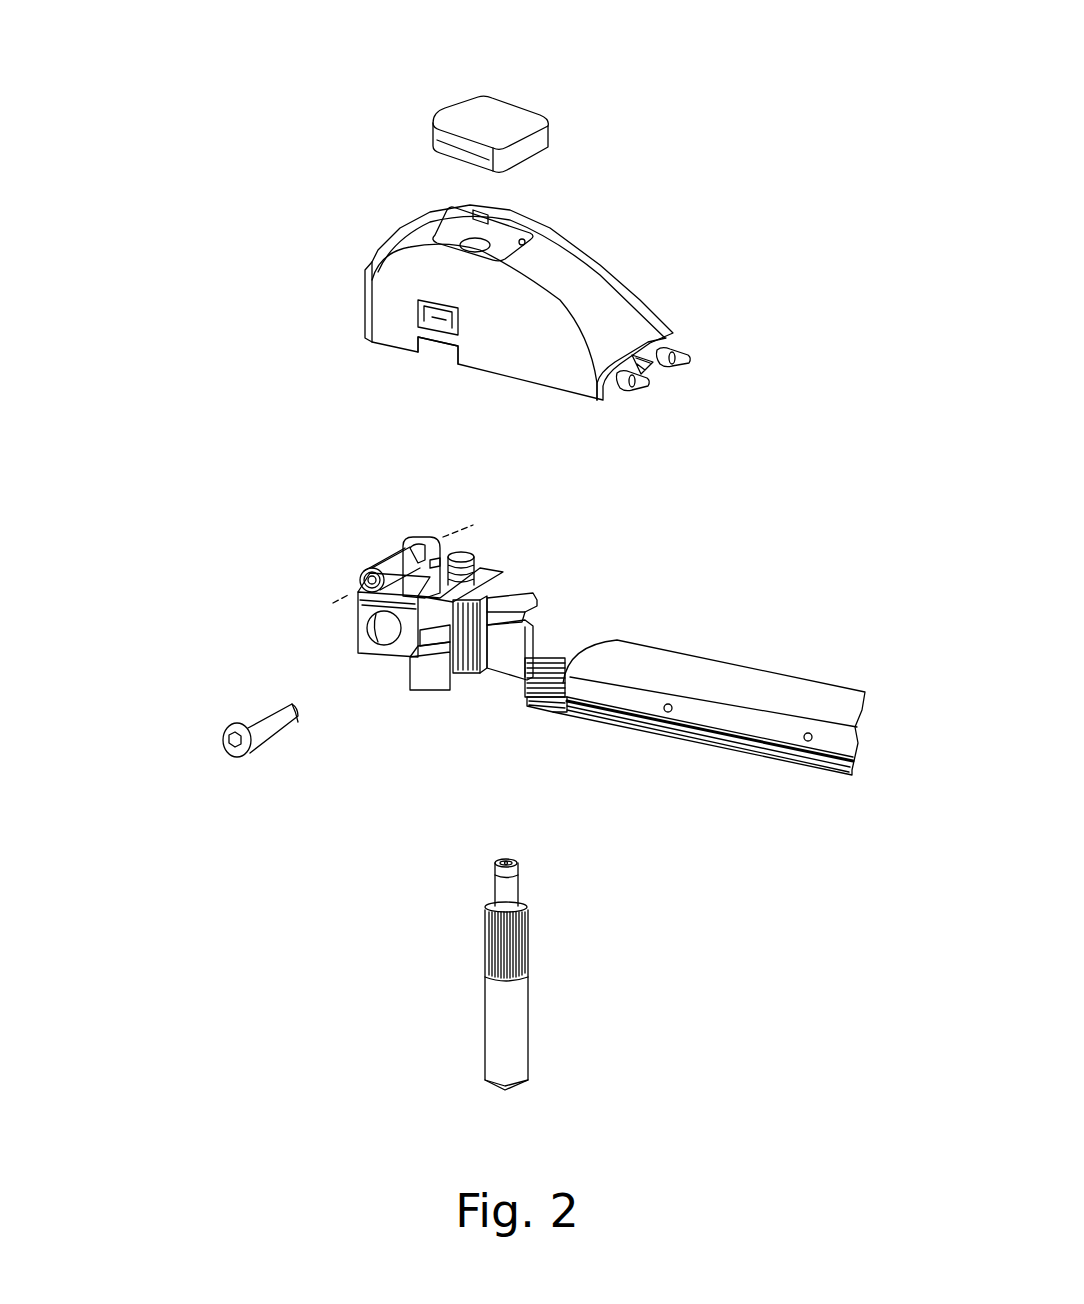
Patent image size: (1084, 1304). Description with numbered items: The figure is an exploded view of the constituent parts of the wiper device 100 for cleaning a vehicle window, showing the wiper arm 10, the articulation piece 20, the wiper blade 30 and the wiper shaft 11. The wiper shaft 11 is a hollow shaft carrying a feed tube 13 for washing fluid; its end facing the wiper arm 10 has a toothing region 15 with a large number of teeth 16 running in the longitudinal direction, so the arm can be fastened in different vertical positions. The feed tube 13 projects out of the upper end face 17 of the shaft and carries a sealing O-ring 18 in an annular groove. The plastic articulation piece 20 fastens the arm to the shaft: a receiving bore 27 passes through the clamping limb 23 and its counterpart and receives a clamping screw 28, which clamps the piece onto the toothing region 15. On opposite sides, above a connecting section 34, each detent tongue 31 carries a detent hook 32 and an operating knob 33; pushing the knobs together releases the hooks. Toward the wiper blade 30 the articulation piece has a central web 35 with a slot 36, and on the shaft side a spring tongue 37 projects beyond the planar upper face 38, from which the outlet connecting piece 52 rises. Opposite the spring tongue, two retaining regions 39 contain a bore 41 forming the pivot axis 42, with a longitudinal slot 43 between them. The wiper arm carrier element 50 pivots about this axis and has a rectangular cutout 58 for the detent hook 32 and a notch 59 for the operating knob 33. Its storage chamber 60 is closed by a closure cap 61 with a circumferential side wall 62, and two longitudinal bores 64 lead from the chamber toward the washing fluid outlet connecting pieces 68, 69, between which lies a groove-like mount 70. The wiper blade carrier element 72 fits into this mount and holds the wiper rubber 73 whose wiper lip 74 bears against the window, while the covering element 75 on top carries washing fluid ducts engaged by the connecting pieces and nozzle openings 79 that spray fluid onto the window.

The wiper arm 10 is at (735, 262).
The wiper device 100 is at (200, 618).
The wiper arm carrier element 50 is at (602, 258).
The rectangular cutout 58 is at (438, 313).
The notch 59 is at (424, 352).
The storage chamber 60 is at (500, 245).
The closure cap 61 is at (512, 118).
The circumferential side wall 62 is at (452, 141).
The longitudinal bores 64 is at (526, 241).
The washing fluid outlet connecting piece 68 is at (635, 388).
The washing fluid outlet connecting piece 69 is at (690, 359).
The groove-like mount 70 is at (650, 368).
The articulation piece 20 is at (340, 597).
The clamping limb 23 is at (358, 625).
The receiving bore 27 is at (378, 648).
The clamping screw 28 is at (265, 718).
The detent tongue 31 is at (462, 652).
The detent hook 32 is at (425, 652).
The operating knob 33 is at (432, 680).
The connecting section 34 is at (482, 625).
The central web 35 is at (530, 652).
The slot 36 is at (535, 618).
The spring tongue 37 is at (530, 600).
The upper face 38 is at (470, 566).
The retaining regions 39 is at (405, 548).
The bore 41 is at (365, 572).
The pivot axis 42 is at (453, 535).
The longitudinal slot 43 is at (436, 562).
The outlet connecting piece 52 is at (352, 595).
The wiper blade 30 is at (715, 648).
The wiper blade carrier element 72 is at (565, 668).
The wiper rubber 73 is at (565, 712).
The wiper lip 74 is at (742, 762).
The covering element 75 is at (748, 678).
The nozzle openings 79 is at (668, 712).
The toothing region 15 is at (483, 950).
The wiper shaft 11 is at (528, 1012).
The feed tube 13 is at (495, 890).
The teeth 16 is at (528, 955).
The upper end face 17 is at (528, 908).
The O-ring 18 is at (512, 866).